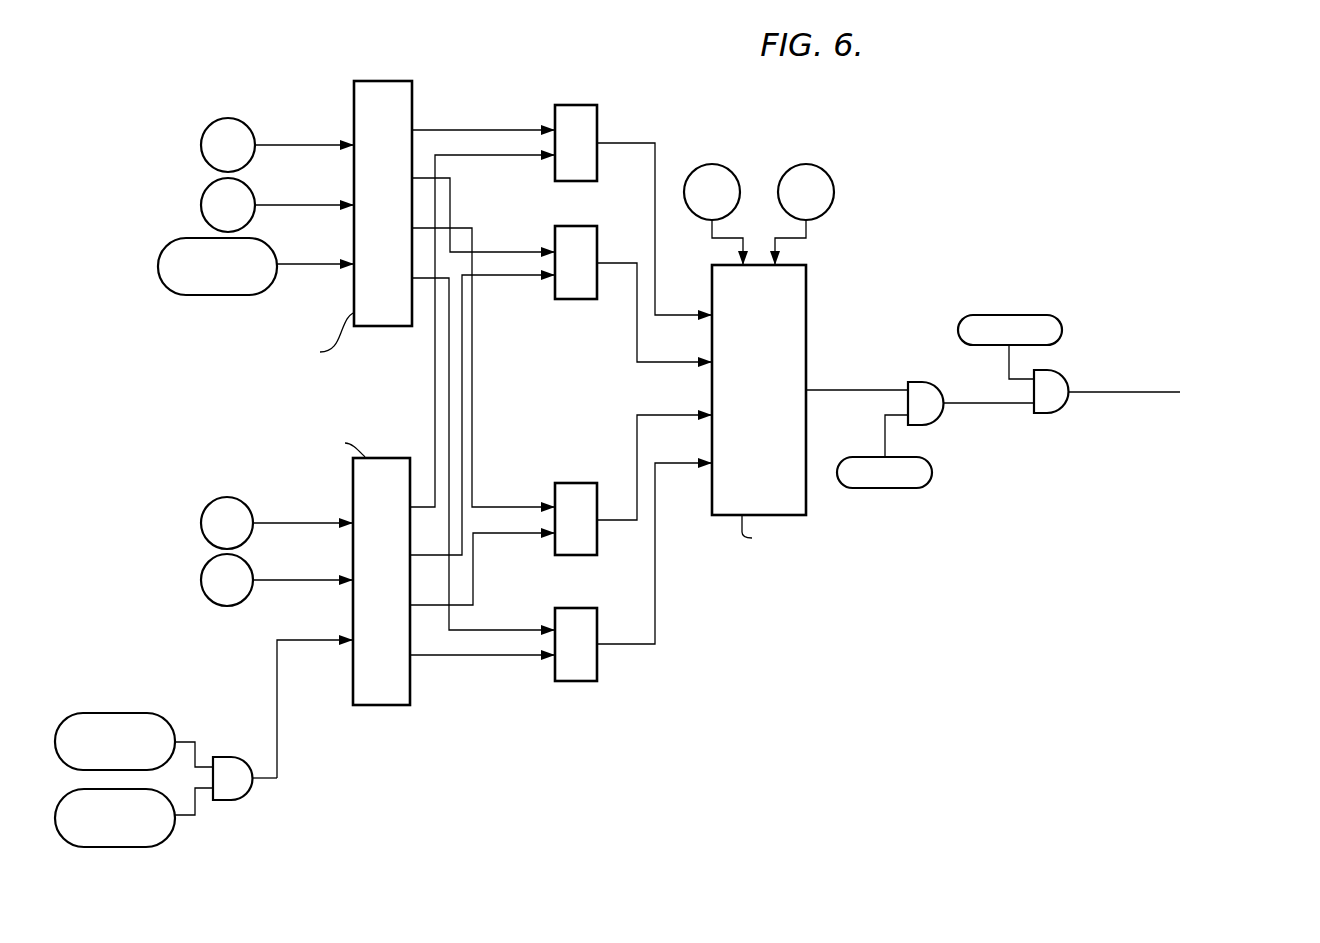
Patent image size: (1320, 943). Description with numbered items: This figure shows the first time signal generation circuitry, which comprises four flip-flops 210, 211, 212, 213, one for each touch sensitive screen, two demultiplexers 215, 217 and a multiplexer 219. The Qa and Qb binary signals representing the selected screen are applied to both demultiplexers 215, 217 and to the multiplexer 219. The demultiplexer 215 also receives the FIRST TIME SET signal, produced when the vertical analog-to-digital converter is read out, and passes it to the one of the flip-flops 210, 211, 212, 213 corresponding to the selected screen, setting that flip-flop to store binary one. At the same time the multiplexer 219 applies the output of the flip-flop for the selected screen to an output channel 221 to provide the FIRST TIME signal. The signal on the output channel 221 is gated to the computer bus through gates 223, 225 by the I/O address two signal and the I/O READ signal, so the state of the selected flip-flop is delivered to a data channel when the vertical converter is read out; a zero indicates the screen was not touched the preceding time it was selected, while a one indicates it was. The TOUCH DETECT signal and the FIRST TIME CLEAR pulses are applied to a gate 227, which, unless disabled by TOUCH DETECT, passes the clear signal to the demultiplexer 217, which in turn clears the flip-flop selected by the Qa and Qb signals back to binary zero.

The flip-flop 210 is at (597, 121).
The flip-flop 211 is at (597, 241).
The flip-flop 212 is at (597, 497).
The flip-flop 213 is at (597, 628).
The demultiplexer 215 is at (397, 80).
The demultiplexer 217 is at (390, 458).
The multiplexer 219 is at (807, 289).
The output channel 221 is at (857, 394).
The gate 223 is at (938, 420).
The gate 225 is at (1063, 409).
The gate 227 is at (247, 797).